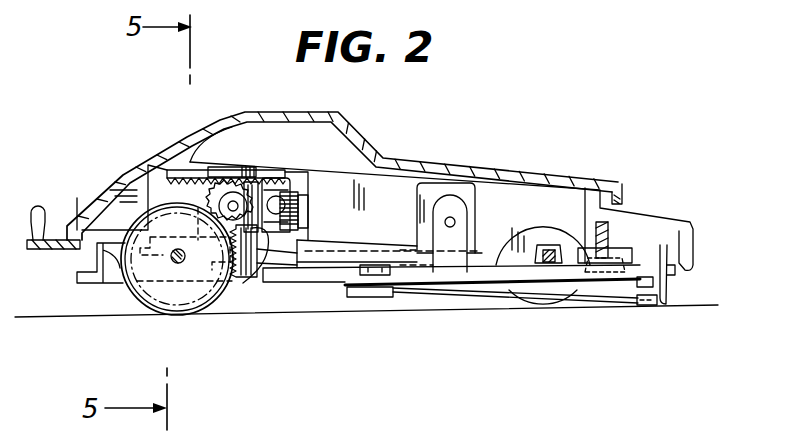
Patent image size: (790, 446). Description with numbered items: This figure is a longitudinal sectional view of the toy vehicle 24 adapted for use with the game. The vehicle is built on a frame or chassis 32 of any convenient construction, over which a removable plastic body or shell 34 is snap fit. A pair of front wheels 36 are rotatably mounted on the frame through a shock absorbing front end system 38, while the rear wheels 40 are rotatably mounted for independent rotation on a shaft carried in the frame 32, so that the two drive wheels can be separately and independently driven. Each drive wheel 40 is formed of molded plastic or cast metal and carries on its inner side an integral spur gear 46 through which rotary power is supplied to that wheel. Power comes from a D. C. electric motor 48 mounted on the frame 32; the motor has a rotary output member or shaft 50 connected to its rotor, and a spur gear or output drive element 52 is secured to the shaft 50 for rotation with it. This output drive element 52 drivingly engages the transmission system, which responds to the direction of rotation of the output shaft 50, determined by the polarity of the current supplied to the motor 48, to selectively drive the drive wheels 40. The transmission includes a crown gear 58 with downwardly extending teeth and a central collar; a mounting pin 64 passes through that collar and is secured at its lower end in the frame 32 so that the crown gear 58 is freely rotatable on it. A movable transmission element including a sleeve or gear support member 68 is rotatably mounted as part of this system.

The toy vehicle 24 is at (568, 138).
The frame or chassis 32 is at (312, 278).
The removable plastic body or shell 34 is at (383, 144).
The front wheels 36 is at (547, 306).
The shock absorbing front end system 38 is at (680, 280).
The rear wheels 40 is at (160, 292).
The spur gear 46 is at (200, 207).
The D. C. electric motor 48 is at (415, 193).
The rotary output member or shaft 50 is at (302, 212).
The spur gear or output drive element 52 is at (295, 192).
The crown gear 58 is at (277, 177).
The mounting pin 64 is at (243, 172).
The sleeve or gear support member 68 is at (243, 283).